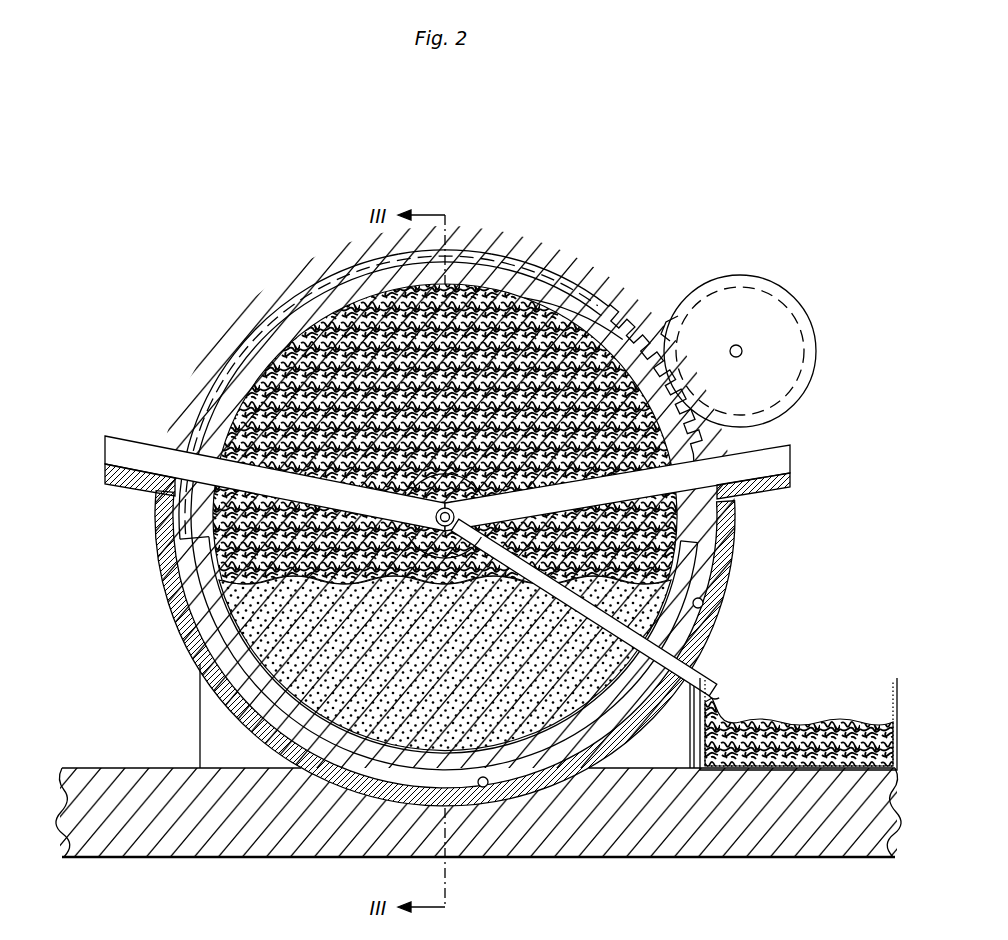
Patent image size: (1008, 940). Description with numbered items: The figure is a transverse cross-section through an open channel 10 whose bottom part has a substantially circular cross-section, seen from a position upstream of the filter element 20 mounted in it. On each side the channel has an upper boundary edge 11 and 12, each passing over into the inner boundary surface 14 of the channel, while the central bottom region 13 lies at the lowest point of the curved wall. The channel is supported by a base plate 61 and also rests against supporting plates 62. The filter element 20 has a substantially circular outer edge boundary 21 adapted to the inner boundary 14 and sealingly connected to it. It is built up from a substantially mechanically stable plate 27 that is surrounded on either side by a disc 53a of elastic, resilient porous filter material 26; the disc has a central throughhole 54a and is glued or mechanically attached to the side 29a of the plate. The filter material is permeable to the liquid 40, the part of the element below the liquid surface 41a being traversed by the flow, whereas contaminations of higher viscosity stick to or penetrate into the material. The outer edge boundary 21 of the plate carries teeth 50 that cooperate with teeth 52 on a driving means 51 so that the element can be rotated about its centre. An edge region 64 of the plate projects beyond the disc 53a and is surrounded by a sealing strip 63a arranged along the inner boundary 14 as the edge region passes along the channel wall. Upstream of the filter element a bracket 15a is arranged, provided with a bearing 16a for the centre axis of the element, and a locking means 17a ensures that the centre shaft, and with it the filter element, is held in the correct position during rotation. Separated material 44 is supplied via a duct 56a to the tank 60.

The open channel 10 is at (198, 668).
The upper boundary edge 11 is at (105, 483).
The upper boundary edge 12 is at (790, 487).
The central bottom region 13 is at (483, 790).
The inner boundary surface 14 is at (705, 603).
The bracket 15a is at (775, 458).
The bearing 16a is at (405, 537).
The locking means 17a is at (380, 478).
The filter element 20 is at (224, 352).
The outer edge boundary 21 is at (264, 318).
The porous filter material 26 is at (320, 322).
The plate 27 is at (337, 287).
The side of the plate 29a is at (463, 273).
The liquid 40 is at (250, 630).
The liquid surface 41a is at (225, 573).
The separated material 44 is at (798, 727).
The teeth 50 is at (613, 313).
The driving means 51 is at (750, 313).
The teeth 52 is at (662, 333).
The disc of filter material 53a is at (507, 310).
The central throughhole 54a is at (457, 483).
The duct 56a is at (687, 637).
The tank 60 is at (847, 692).
The base plate 61 is at (650, 830).
The supporting plates 62 is at (215, 722).
The sealing strip 63a is at (323, 747).
The edge region 64 is at (397, 268).